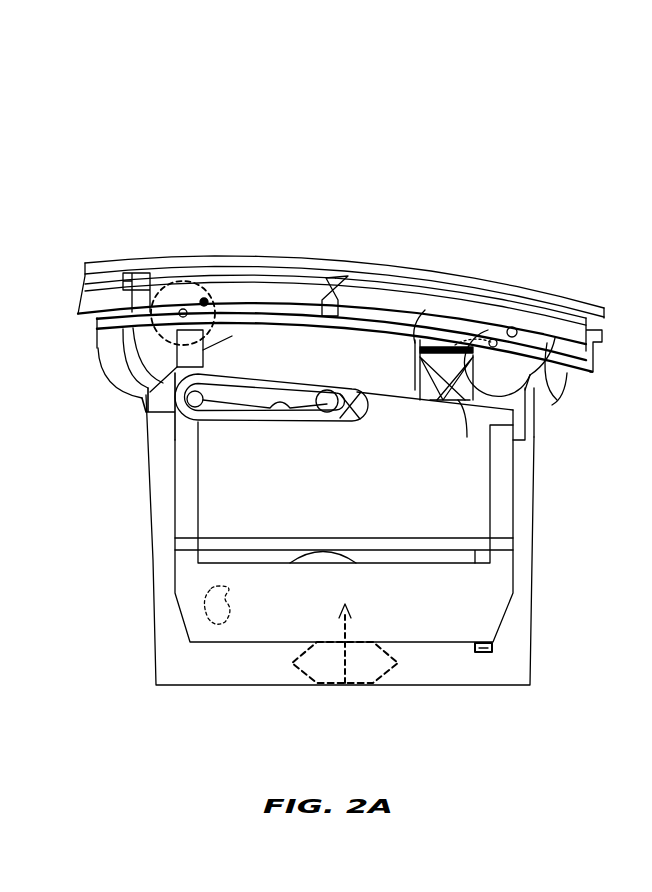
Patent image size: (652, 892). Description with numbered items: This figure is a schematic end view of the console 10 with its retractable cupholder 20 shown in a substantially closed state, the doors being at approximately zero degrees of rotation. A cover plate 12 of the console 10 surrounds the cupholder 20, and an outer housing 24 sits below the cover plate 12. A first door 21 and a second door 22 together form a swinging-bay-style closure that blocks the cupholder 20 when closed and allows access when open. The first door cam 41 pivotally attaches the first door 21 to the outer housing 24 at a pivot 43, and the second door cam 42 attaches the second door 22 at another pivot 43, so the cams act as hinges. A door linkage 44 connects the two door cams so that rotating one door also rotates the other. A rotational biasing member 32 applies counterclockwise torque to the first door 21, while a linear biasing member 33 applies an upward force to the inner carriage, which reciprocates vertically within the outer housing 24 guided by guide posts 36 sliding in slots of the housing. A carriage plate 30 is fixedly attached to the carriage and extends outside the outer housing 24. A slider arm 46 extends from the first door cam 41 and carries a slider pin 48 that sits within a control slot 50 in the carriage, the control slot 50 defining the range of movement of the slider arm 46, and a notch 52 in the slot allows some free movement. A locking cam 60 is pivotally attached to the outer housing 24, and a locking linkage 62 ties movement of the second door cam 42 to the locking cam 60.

The console assembly 10 is at (120, 92).
The cover plate 12 is at (585, 306).
The cupholder assembly 20 is at (153, 741).
The first door 21 is at (250, 280).
The second door 22 is at (440, 300).
The outer housing 24 is at (157, 495).
The carriage plate 30 is at (322, 474).
The rotational biasing member 32 is at (138, 275).
The linear biasing member 33 is at (294, 688).
The guide posts 36 is at (492, 645).
The first door cam 41 is at (108, 352).
The second door cam 42 is at (556, 402).
The pivot 43 is at (184, 309).
The door linkage 44 is at (430, 340).
The slider arm 46 is at (142, 390).
The slider pin 48 is at (195, 410).
The control slot 50 is at (345, 400).
The notch 52 is at (285, 412).
The locking cam 60 is at (318, 547).
The locking linkage 62 is at (465, 438).